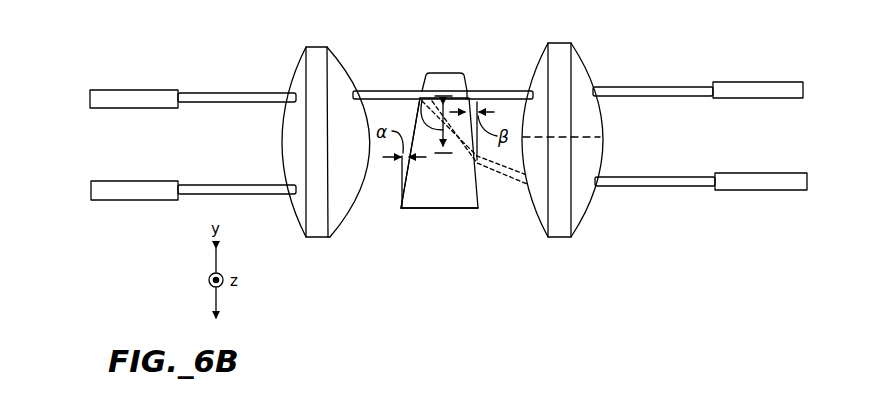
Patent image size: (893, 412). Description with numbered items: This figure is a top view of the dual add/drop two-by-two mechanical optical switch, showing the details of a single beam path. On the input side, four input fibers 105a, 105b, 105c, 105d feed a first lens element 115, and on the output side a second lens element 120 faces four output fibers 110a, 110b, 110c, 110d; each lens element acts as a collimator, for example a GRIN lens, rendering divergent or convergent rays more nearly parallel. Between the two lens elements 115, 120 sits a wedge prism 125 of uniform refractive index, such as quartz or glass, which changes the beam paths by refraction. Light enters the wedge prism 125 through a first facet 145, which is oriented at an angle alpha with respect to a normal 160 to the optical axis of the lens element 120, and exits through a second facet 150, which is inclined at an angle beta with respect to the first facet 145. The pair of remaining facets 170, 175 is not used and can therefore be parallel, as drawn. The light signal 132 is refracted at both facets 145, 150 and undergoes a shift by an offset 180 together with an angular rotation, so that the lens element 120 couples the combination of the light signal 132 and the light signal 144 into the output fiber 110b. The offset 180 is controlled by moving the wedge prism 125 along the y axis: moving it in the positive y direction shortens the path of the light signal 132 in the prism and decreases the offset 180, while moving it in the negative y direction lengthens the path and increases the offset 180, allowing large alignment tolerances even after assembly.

The input fiber 105a is at (117, 181).
The input fiber 105b is at (148, 196).
The input fiber 105c is at (117, 90).
The input fiber 105d is at (148, 104).
The output fiber 110a is at (768, 173).
The output fiber 110b is at (738, 185).
The output fiber 110c is at (738, 93).
The output fiber 110d is at (768, 82).
The first lens element 115 is at (316, 46).
The second lens element 120 is at (562, 44).
The wedge prism 125 is at (433, 203).
The light signal 132 is at (377, 90).
The light signal 144 is at (508, 178).
The first facet 145 is at (417, 172).
The second facet 150 is at (470, 89).
The normal 160 is at (398, 172).
The remaining facet 170 is at (423, 210).
The remaining facet 175 is at (457, 72).
The offset 180 is at (415, 117).